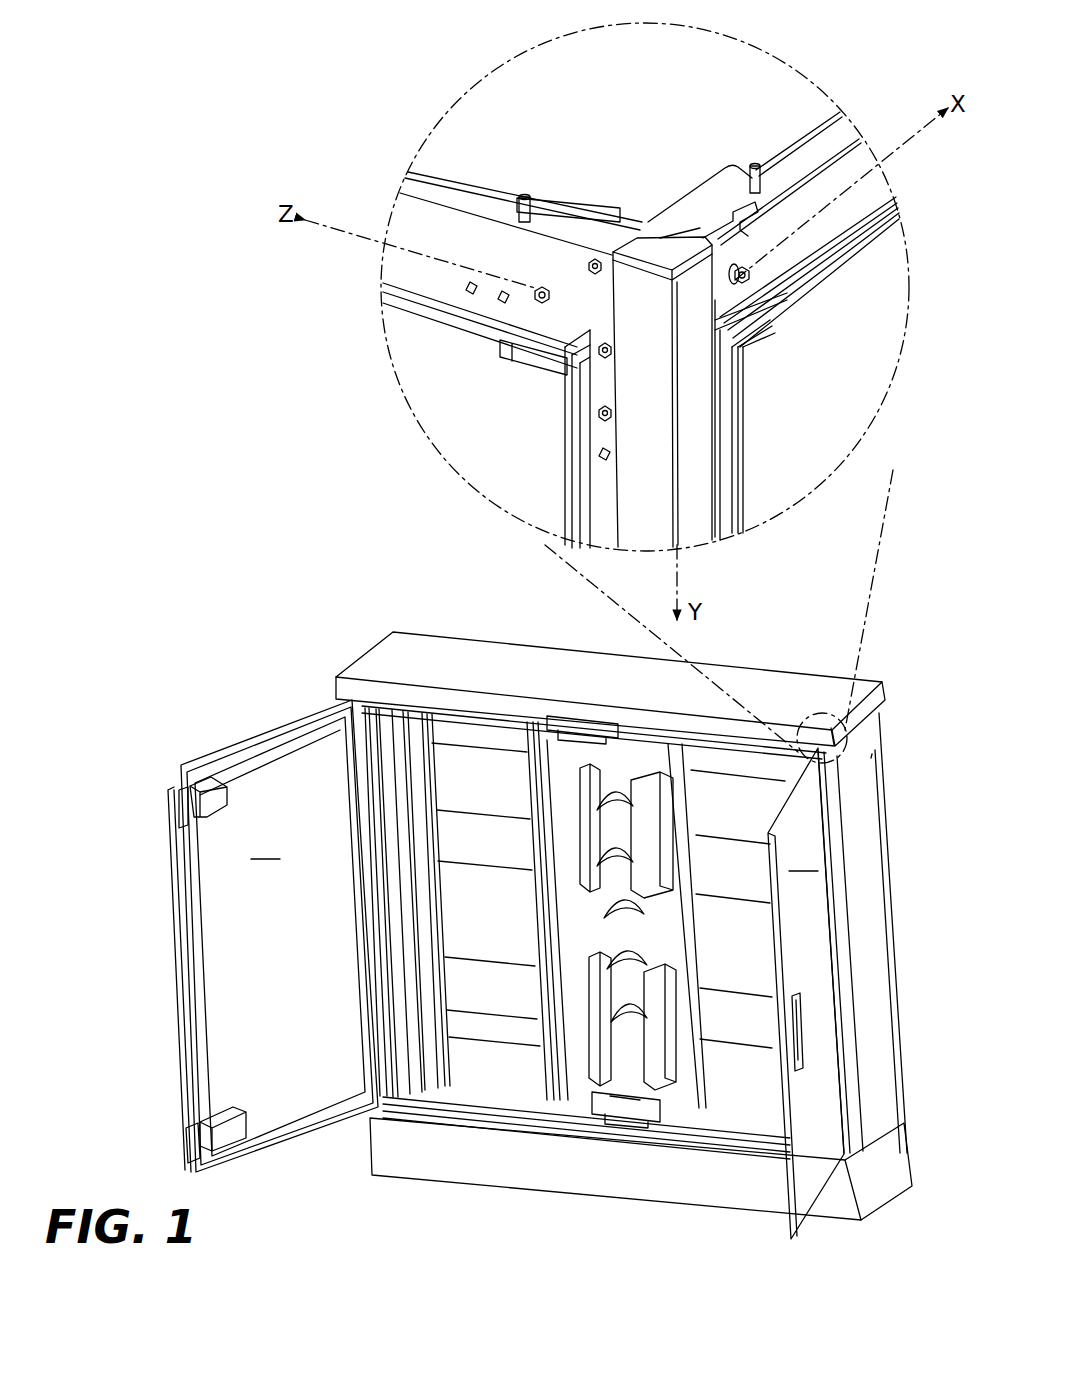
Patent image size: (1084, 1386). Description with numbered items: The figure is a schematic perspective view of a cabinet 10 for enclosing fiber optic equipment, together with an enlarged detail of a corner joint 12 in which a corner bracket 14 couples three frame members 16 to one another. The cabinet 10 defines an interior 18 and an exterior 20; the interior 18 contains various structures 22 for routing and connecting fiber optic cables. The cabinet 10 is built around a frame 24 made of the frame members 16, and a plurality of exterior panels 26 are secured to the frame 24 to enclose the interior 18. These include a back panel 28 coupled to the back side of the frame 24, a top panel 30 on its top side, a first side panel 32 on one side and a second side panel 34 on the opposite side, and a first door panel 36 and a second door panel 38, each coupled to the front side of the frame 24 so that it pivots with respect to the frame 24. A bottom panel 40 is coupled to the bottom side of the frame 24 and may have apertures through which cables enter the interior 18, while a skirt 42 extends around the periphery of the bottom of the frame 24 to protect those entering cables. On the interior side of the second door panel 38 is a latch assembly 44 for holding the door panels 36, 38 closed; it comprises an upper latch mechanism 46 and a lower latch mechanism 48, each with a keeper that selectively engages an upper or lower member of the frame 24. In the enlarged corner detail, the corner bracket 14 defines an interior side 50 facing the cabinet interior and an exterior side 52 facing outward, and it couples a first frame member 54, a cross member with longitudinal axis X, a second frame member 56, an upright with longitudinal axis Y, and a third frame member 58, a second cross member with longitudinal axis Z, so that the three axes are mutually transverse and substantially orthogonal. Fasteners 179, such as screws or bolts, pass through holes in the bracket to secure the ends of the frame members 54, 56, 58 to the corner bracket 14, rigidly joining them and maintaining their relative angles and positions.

The cabinet 10 is at (312, 616).
The corner joint 12 is at (624, 118).
The corner bracket 14 is at (548, 197).
The frame members 16 is at (457, 271).
The interior 18 is at (466, 738).
The exterior 20 is at (417, 1148).
The structures 22 is at (726, 852).
The frame 24 is at (835, 283).
The exterior panels 26 is at (392, 640).
The back panel 28 is at (892, 814).
The top panel 30 is at (758, 675).
The first side panel 32 is at (878, 862).
The second side panel 34 is at (366, 1140).
The first door panel 36 is at (806, 993).
The second door panel 38 is at (270, 794).
The bottom panel 40 is at (530, 1120).
The skirt 42 is at (722, 1190).
The latch assembly 44 is at (166, 811).
The upper latch mechanism 46 is at (228, 802).
The lower latch mechanism 48 is at (244, 1118).
The interior side 50 is at (656, 142).
The exterior side 52 is at (482, 438).
The first frame member 54 is at (796, 300).
The second frame member 56 is at (728, 423).
The third frame member 58 is at (482, 345).
The fasteners 179 is at (540, 286).